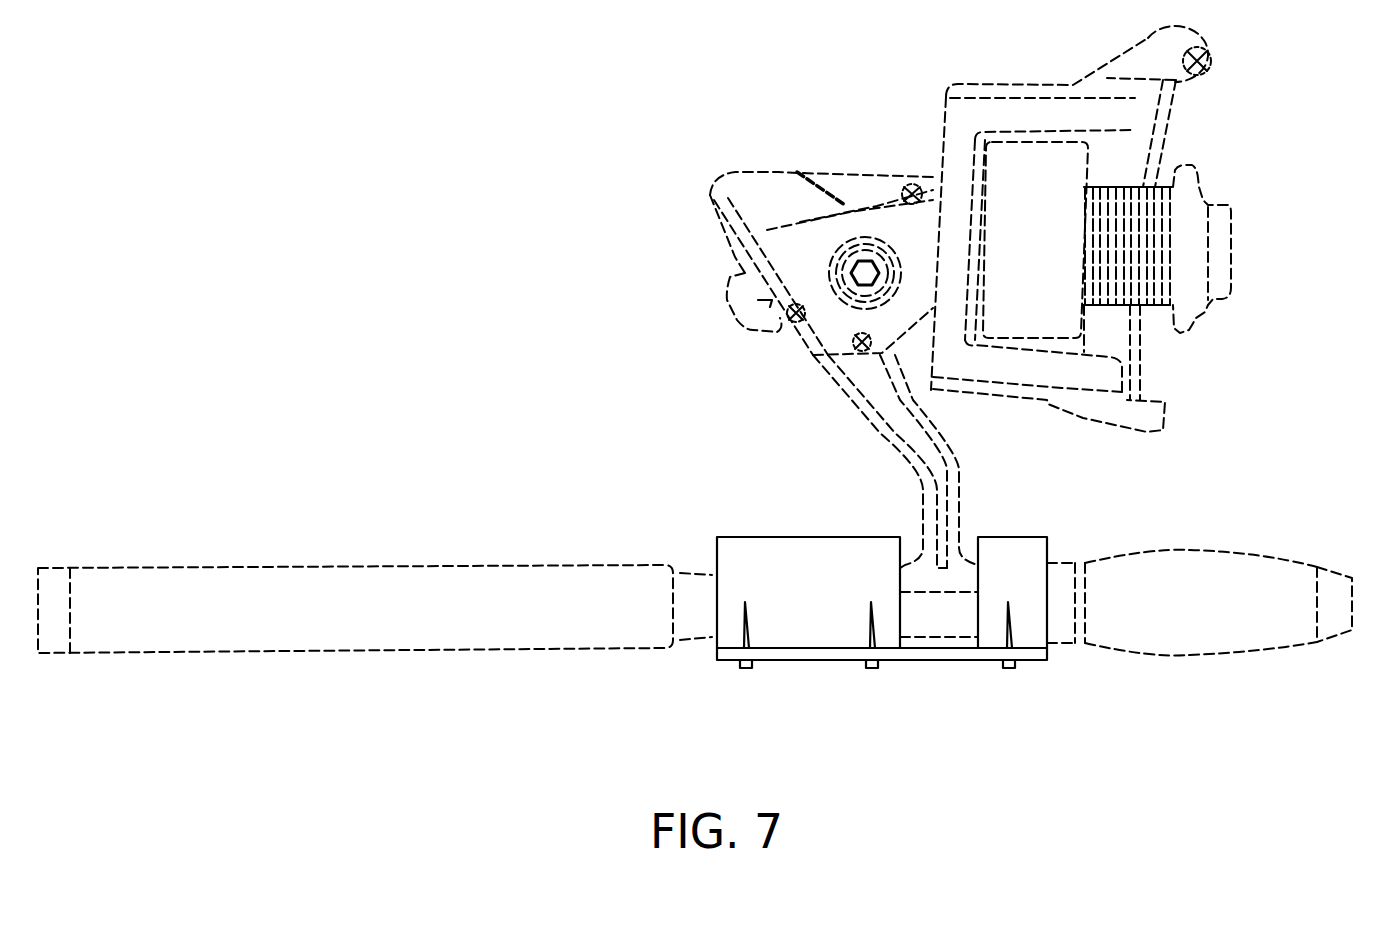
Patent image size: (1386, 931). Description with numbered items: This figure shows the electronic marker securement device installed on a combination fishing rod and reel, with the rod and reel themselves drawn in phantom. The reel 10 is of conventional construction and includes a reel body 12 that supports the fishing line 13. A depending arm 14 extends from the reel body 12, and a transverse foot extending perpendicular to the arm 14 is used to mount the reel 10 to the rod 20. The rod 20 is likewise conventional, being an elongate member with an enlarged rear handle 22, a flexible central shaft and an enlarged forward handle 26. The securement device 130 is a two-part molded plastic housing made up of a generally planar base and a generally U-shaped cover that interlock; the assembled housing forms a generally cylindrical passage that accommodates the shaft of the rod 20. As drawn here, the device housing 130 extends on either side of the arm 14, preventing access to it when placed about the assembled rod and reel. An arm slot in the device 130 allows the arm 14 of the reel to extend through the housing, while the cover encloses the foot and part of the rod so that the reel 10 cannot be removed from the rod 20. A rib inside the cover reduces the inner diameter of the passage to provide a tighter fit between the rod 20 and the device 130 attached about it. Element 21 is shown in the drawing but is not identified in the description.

The reel 10 is at (958, 130).
The reel body 12 is at (1032, 230).
The fishing line 13 is at (1137, 255).
The depending arm 14 is at (910, 435).
The securement device 130 is at (717, 536).
The fishing rod 20 is at (1187, 638).
The locking nut 21 is at (1055, 625).
The rear handle 22 is at (158, 627).
The forward handle 26 is at (1160, 577).